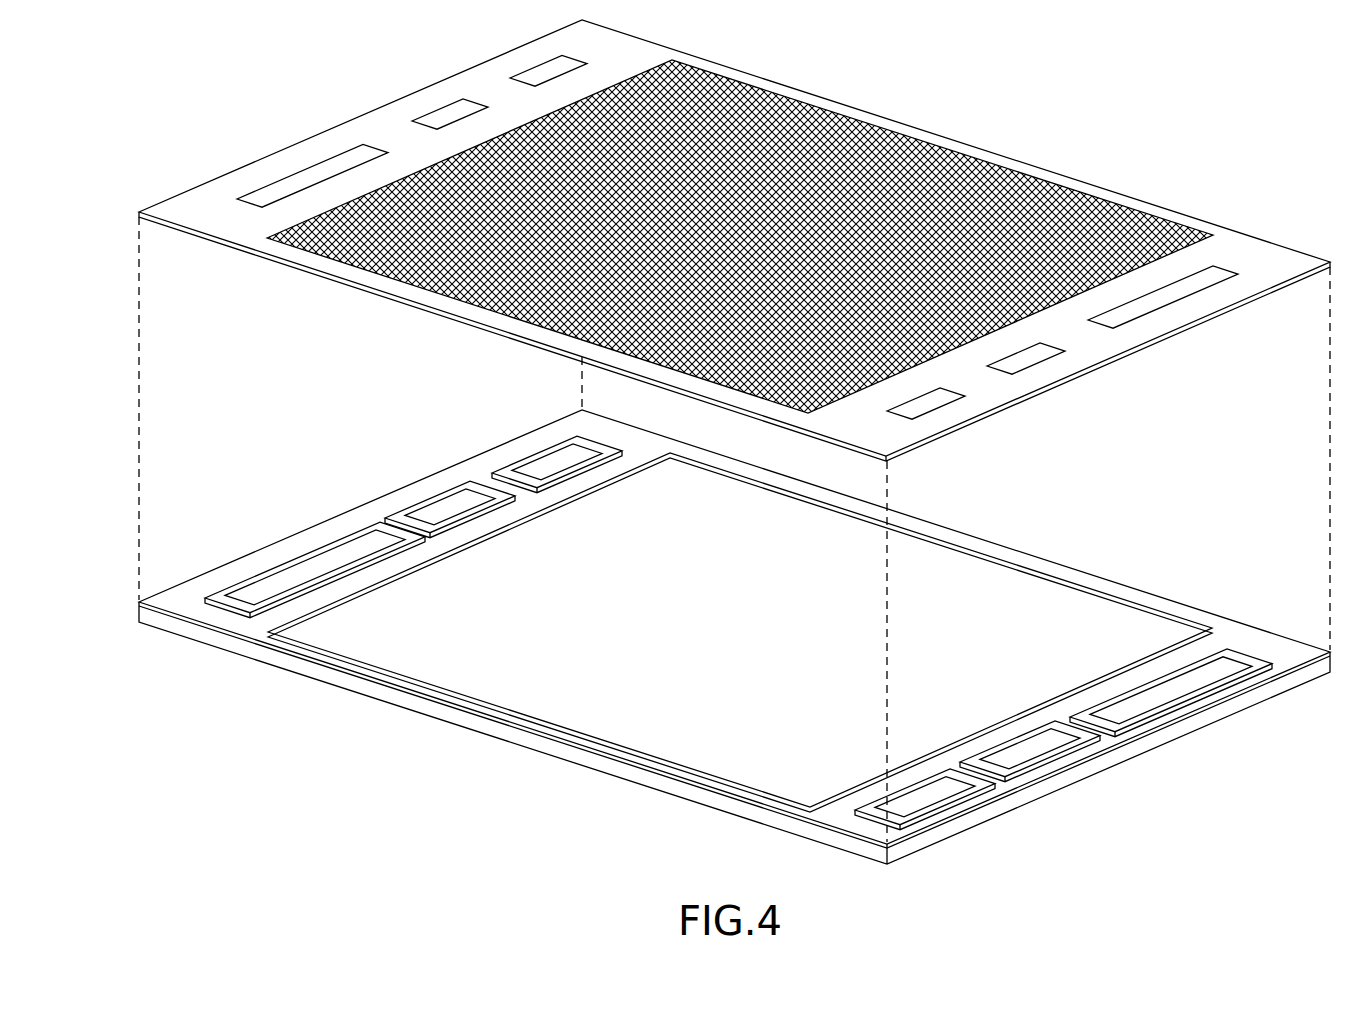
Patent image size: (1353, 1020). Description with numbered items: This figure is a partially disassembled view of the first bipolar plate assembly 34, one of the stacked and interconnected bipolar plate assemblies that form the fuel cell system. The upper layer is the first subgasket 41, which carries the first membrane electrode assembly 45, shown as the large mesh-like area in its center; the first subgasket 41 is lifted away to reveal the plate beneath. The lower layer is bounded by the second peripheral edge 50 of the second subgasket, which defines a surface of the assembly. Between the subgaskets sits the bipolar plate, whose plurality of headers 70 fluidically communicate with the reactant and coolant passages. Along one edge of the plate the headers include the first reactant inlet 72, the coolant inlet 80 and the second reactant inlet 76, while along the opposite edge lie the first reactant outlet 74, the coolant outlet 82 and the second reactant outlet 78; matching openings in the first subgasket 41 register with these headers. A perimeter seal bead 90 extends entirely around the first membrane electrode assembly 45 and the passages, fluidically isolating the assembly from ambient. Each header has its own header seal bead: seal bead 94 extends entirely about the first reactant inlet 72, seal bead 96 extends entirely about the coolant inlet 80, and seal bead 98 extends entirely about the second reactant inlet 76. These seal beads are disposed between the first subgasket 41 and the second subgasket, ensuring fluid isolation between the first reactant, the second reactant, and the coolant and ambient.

The first bipolar plate assembly 34 is at (321, 105).
The first subgasket 41 is at (440, 300).
The first membrane electrode assembly 45 is at (703, 338).
The plurality of headers 70 is at (350, 457).
The second peripheral edge 50 is at (227, 650).
The perimeter seal bead 90 is at (985, 552).
The seal bead 98 is at (295, 548).
The second reactant inlet 76 is at (345, 546).
The seal bead 96 is at (444, 510).
The coolant inlet 80 is at (475, 497).
The seal bead 94 is at (547, 466).
The first reactant inlet 72 is at (575, 455).
The first reactant outlet 74 is at (927, 800).
The coolant outlet 82 is at (1040, 750).
The second reactant outlet 78 is at (1160, 692).